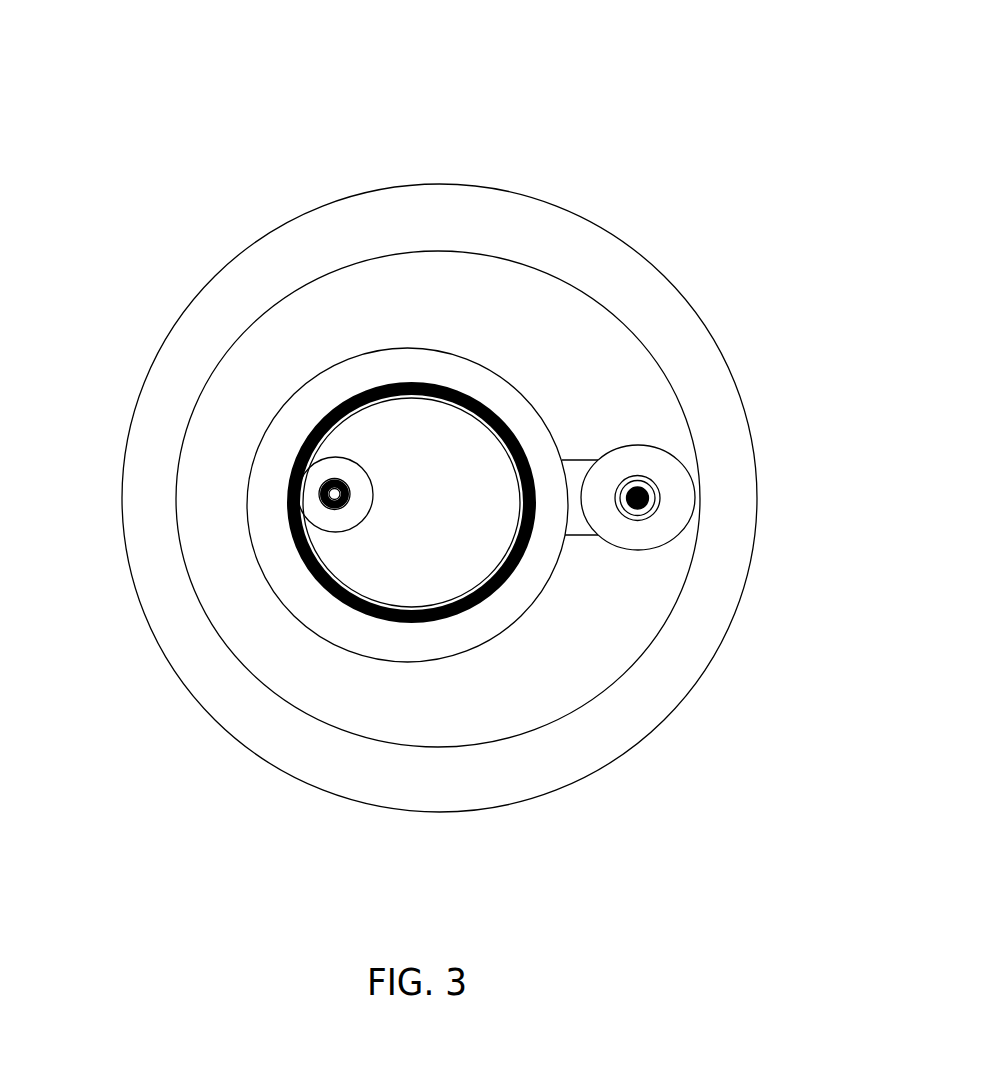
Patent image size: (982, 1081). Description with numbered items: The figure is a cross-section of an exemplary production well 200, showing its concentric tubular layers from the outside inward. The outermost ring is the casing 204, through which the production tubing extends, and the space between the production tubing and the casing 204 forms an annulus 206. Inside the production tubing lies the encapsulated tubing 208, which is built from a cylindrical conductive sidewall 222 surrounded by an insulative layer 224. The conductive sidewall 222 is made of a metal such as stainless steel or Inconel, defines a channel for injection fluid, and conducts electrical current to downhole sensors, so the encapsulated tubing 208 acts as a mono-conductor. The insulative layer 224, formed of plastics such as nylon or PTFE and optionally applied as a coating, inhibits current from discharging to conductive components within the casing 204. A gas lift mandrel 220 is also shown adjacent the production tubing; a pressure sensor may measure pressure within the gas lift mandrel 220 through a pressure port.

The well 200 is at (662, 78).
The casing 204 is at (439, 184).
The annulus 206 is at (600, 353).
The encapsulated tubing 208 is at (290, 449).
The gas lift mandrel 220 is at (697, 497).
The conductive sidewall 222 is at (319, 495).
The insulative layer 224 is at (334, 533).